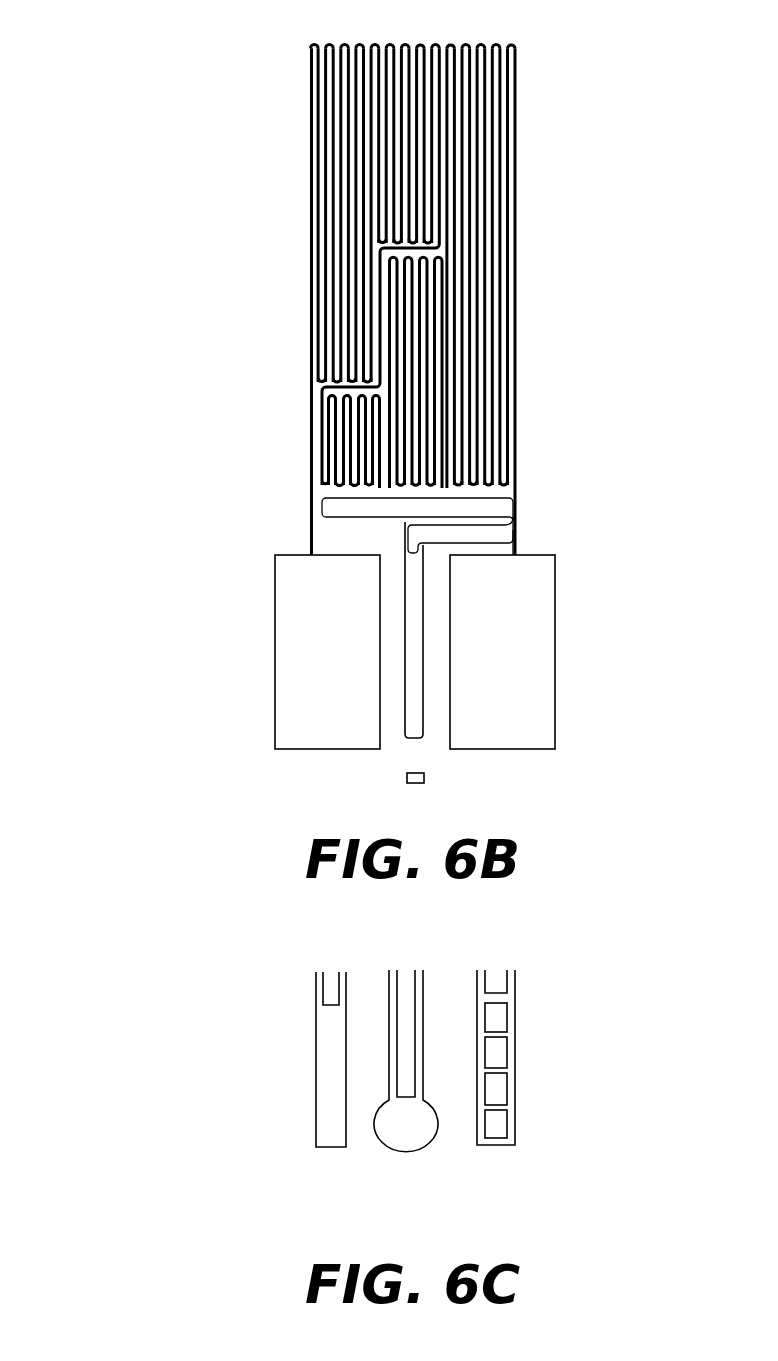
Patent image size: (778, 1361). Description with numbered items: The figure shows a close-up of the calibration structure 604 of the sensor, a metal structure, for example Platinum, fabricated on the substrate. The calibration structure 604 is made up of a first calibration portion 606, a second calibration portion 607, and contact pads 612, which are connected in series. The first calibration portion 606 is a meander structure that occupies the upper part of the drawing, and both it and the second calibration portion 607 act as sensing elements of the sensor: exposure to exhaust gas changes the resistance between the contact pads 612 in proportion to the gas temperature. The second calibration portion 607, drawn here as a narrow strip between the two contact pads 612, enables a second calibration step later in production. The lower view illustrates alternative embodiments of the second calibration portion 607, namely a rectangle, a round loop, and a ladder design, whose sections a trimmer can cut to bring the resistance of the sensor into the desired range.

In FIG. 6B, the calibration structure 604 is at (142, 90).
In FIG. 6B, the first calibration portion 606 is at (311, 265).
In FIG. 6B, the contact pads 612 is at (274, 657).
In FIG. 6B, the second calibration portion 607 is at (411, 738).
In FIG. 6C, the second calibration portion 607 is at (558, 1068).